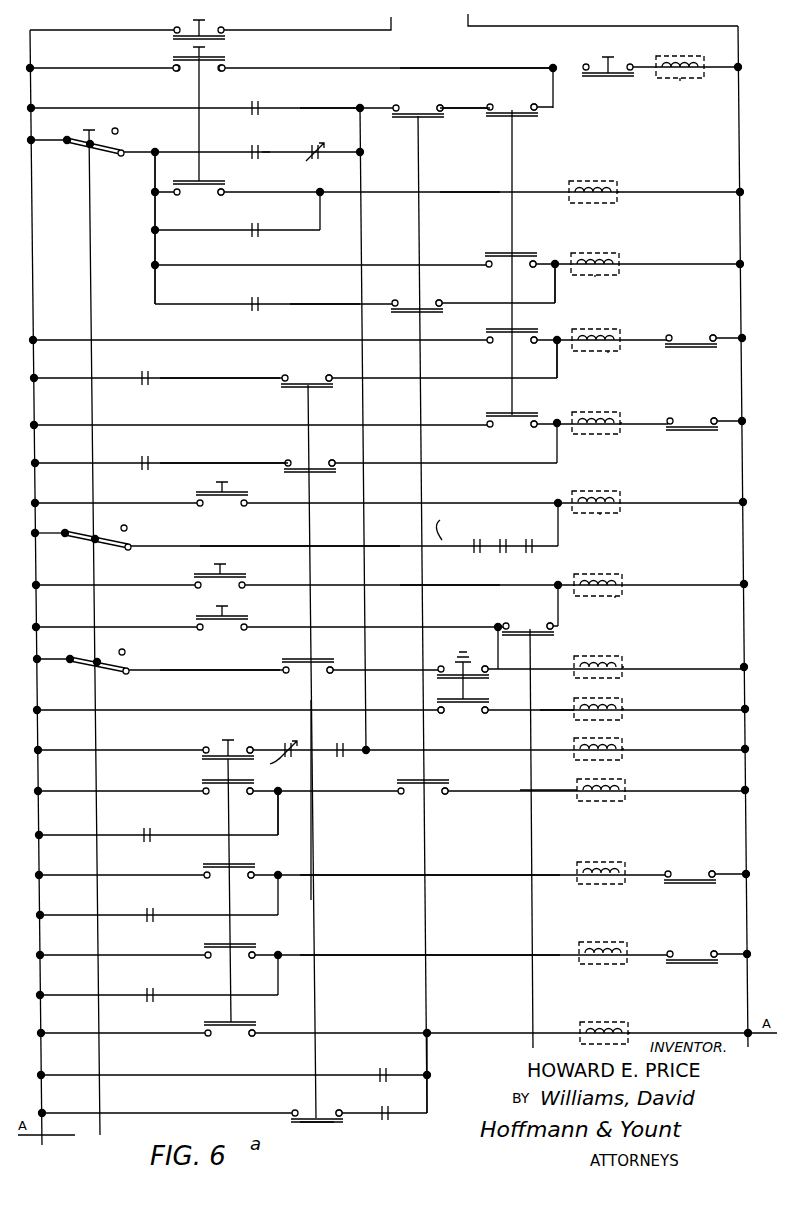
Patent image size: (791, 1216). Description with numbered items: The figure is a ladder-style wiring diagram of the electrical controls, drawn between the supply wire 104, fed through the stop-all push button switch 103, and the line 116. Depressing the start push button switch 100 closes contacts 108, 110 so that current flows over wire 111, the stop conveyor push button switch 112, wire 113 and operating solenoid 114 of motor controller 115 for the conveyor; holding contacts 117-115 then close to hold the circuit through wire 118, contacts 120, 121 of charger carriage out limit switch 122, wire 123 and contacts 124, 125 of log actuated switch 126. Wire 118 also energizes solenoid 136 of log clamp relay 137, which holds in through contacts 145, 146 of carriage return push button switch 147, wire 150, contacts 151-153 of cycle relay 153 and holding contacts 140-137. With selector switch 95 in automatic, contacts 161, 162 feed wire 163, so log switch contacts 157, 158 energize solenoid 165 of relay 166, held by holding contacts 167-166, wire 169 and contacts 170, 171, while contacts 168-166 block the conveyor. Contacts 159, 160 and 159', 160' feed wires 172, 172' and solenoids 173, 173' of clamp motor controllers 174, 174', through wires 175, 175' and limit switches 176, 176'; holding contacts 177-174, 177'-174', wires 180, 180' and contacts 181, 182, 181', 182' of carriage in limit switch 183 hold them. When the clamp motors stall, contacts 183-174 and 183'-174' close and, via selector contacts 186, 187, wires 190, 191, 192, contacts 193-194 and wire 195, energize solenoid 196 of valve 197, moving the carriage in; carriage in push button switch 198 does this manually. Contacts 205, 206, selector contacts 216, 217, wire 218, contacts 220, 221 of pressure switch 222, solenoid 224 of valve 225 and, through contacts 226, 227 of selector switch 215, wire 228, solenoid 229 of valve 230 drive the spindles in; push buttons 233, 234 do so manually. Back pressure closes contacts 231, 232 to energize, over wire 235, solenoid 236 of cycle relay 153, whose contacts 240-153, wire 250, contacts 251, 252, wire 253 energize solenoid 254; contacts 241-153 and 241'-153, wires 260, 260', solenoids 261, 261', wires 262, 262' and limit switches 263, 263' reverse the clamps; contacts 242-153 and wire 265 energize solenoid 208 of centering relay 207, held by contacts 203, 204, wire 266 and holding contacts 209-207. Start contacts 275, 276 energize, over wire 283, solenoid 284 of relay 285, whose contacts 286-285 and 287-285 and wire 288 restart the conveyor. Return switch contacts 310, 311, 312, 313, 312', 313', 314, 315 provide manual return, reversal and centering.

The selector switch 95 is at (91, 242).
The start push button switch 100 is at (205, 56).
The stop-all push button switch 103 is at (207, 24).
The wire 104 is at (30, 214).
The contact of start push button switch 108 is at (176, 68).
The contact of start push button switch 110 is at (222, 68).
The wire 111 is at (474, 65).
The stop conveyor push button switch 112 is at (616, 58).
The wire 113 is at (656, 73).
The operating solenoid of motor controller 114 is at (696, 50).
The motor controller 115 is at (675, 80).
The line 116 is at (738, 132).
The holding contacts of motor controller 117-115 is at (251, 100).
The wire 118 is at (330, 108).
The contact of charger carriage out limit switch 120 is at (398, 104).
The contact of charger carriage out limit switch 121 is at (438, 104).
The charger carriage out limit switch 122 is at (420, 166).
The wire 123 is at (458, 114).
The contact of log actuated switch 124 is at (488, 104).
The contact of log actuated switch 125 is at (532, 104).
The log actuated switch 126 is at (513, 157).
The operating solenoid of log clamp relay 136 is at (604, 744).
The log clamp relay 137 is at (624, 744).
The holding contacts of log clamp relay 140-137 is at (338, 758).
The contact of charger carriage return push button switch 145 is at (208, 748).
The contact of charger carriage return push button switch 146 is at (248, 748).
The charger carriage return push button switch 147 is at (228, 857).
The wire 150 is at (282, 747).
The contacts of cycle relay 151-153 is at (283, 771).
The cycle relay 153 is at (624, 704).
The contact of log actuated switch 157 is at (488, 268).
The contact of log actuated switch 158 is at (532, 268).
The contact of log actuated switch 159 is at (501, 348).
The contact of log actuated switch 160 is at (532, 352).
The contact of log actuated switch 159' is at (500, 432).
The contact of log actuated switch 160' is at (532, 436).
The contact of selector switch 161 is at (70, 136).
The contact of selector switch 162 is at (120, 158).
The wire 163 is at (154, 216).
The operating solenoid of relay 165 is at (610, 254).
The relay 166 is at (598, 278).
The holding contacts of relay 167-166 is at (243, 290).
The normally closed contacts of relay 168-166 is at (310, 160).
The wire 169 is at (338, 306).
The contact of charger out limit switch 170 is at (394, 298).
The contact of charger out limit switch 171 is at (444, 300).
The wire 172 is at (581, 322).
The wire 172' is at (575, 453).
The operating solenoid of motor controller 173 is at (613, 331).
The operating solenoid of motor controller 173' is at (596, 412).
The motor controller 174 is at (636, 608).
The motor controller 174' is at (642, 665).
The wire 175 is at (686, 352).
The limit switch 176 is at (704, 360).
The wire 175' is at (672, 437).
The limit switch 176' is at (698, 437).
The holding contacts of motor controller 177-174 is at (138, 362).
The holding contacts of motor controller 177'-174' is at (177, 453).
The wire 180 is at (220, 389).
The wire 180' is at (224, 476).
The contact of log charger carriage in limit switch 181 is at (302, 370).
The contact of log charger carriage in limit switch 182 is at (337, 367).
The contact of log charger carriage in limit switch 181' is at (300, 456).
The contact of log charger carriage in limit switch 182' is at (341, 453).
The log charger carriage in limit switch 183 is at (332, 800).
The contacts of motor controller 183-174 is at (470, 520).
The contacts of motor controller 183'-174' is at (532, 528).
The contact of selector switch 186 is at (68, 540).
The contact of selector switch 187 is at (126, 548).
The wire 190 is at (282, 546).
The wire 191 is at (476, 550).
The wire 192 is at (504, 554).
The contacts of lathe spindle out position relay 193-194 is at (532, 554).
The wire 195 is at (558, 536).
The operating solenoid of fluid control valve 196 is at (606, 492).
The fluid control valve 197 is at (606, 514).
The carriage in push button switch 198 is at (216, 483).
The contact of log charger carriage in limit switch 203 is at (294, 1112).
The contact of log charger carriage in limit switch 204 is at (338, 1112).
The contact of log charger carriage in limit switch 205 is at (286, 672).
The contact of log charger carriage in limit switch 206 is at (330, 672).
The charger centering relay 207 is at (628, 1028).
The operating solenoid of charger centering relay 208 is at (604, 1024).
The holding contacts of charger centering relay 209-207 is at (382, 1122).
The selector switch 215 is at (530, 842).
The contact of selector switch 216 is at (72, 662).
The contact of selector switch 217 is at (126, 672).
The wire 218 is at (236, 670).
The contact of pressure responsive switch 220 is at (442, 664).
The contact of pressure responsive switch 221 is at (484, 666).
The adjustable pressure responsive switch 222 is at (463, 690).
The operating solenoid of solenoid operated valve 224 is at (602, 662).
The solenoid operated valve 225 is at (624, 662).
The contact of selector switch 226 is at (512, 620).
The contact of selector switch 227 is at (546, 626).
The wire 228 is at (442, 592).
The operating solenoid of solenoid operated valve 229 is at (598, 582).
The solenoid operated valve 230 is at (616, 598).
The contact of pressure responsive switch 231 is at (440, 712).
The contact of pressure responsive switch 232 is at (484, 712).
The far spindle in push button switch 233 is at (214, 612).
The near spindle in push button switch 234 is at (214, 569).
The wire 235 is at (568, 710).
The operating solenoid of cycle relay 236 is at (604, 706).
The contacts of cycle relay 240-153 is at (140, 828).
The contacts of cycle relay 241-153 is at (147, 922).
The contacts of cycle relay 241'-153 is at (178, 1006).
The contacts of cycle relay 242-153 is at (380, 1068).
The wire 250 is at (278, 822).
The contact of carriage out limit switch 251 is at (404, 794).
The contact of carriage out limit switch 252 is at (446, 794).
The wire 253 is at (572, 796).
The operating solenoid of solenoid valve 254 is at (602, 786).
The wire 260 is at (430, 863).
The wire 260' is at (430, 944).
The operating solenoid of motor controller 261 is at (603, 864).
The reverse solenoid of motor controller 261' is at (603, 943).
The wire 262 is at (674, 886).
The log clamp open limit switch 263 is at (700, 860).
The wire 262' is at (675, 966).
The limit switch 263' is at (704, 939).
The wire 265 is at (427, 1068).
The wire 266 is at (364, 1122).
The contact of start push button switch 275 is at (180, 195).
The contact of start push button switch 276 is at (220, 195).
The wire 283 is at (480, 198).
The operating solenoid of relay 284 is at (578, 184).
The relay 285 is at (618, 186).
The contacts of relay 286-285 is at (246, 218).
The contacts of relay 287-285 is at (222, 137).
The wire 288 is at (276, 154).
The contact of charger carriage return push button switch 310 is at (210, 795).
The contact of charger carriage return push button switch 311 is at (248, 795).
The contact of charger carriage return push button switch 312 is at (216, 881).
The contact of charger carriage return push button switch 313 is at (252, 885).
The contact of charger carriage return push button switch 312' is at (217, 961).
The contact of charger carriage return push button switch 313' is at (254, 965).
The contact of charger carriage return push button switch 314 is at (208, 1038).
The contact of charger carriage return push button switch 315 is at (250, 1036).